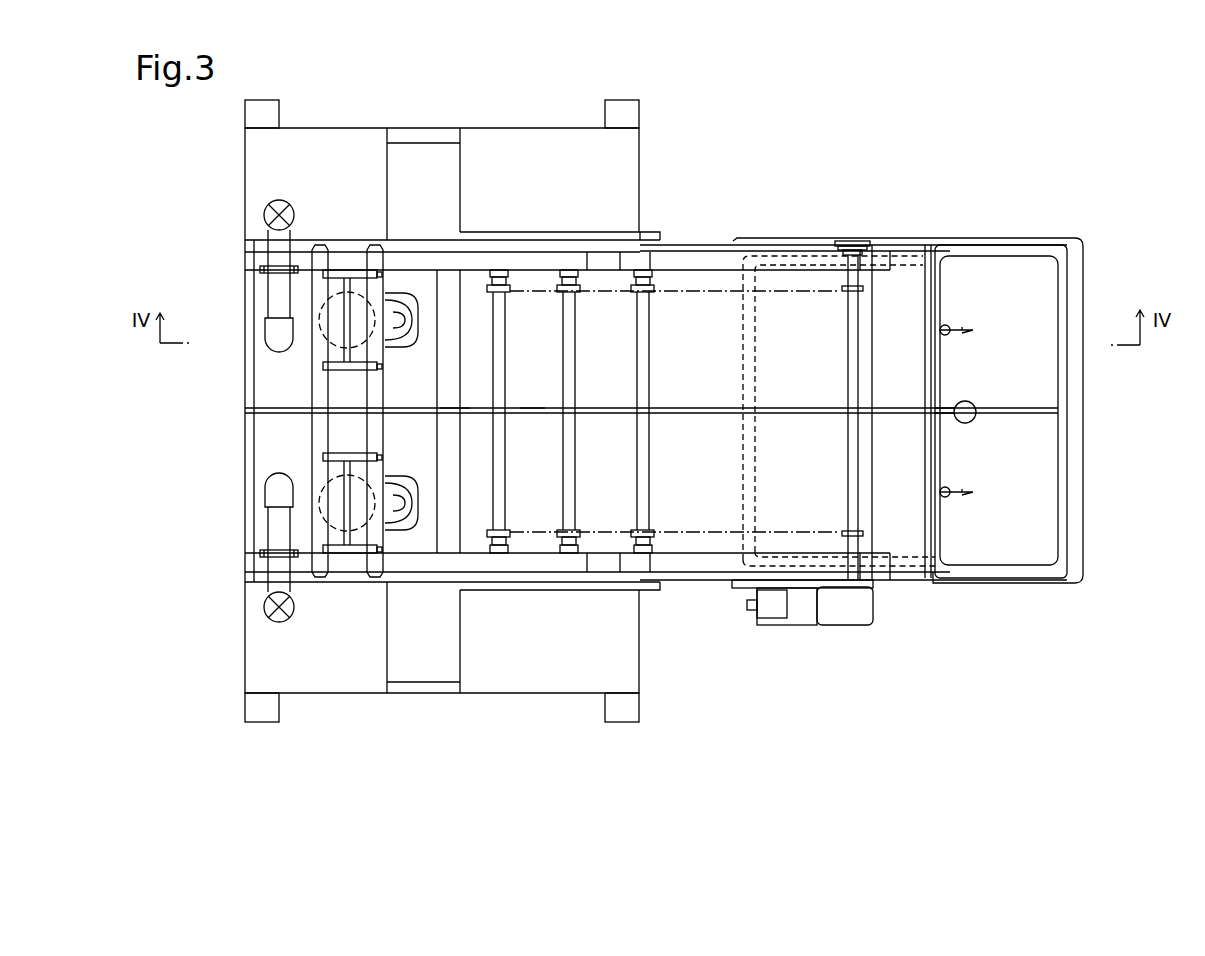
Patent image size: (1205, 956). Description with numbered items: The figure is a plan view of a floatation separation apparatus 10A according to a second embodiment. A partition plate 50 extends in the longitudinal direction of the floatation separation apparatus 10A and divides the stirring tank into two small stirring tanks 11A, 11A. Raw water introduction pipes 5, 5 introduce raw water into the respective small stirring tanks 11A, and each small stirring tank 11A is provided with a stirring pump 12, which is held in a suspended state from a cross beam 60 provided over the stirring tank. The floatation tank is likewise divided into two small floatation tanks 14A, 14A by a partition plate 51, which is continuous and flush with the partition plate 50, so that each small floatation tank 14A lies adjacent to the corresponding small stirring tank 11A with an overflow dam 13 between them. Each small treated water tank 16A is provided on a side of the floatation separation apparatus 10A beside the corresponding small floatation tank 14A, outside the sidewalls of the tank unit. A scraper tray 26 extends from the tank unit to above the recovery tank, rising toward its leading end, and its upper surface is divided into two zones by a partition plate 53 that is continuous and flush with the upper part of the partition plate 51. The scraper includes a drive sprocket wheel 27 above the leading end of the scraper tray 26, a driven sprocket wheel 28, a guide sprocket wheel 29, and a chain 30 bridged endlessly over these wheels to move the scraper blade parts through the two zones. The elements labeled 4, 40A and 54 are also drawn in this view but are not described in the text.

The caster 4 is at (285, 200).
The raw water introduction pipe 5 is at (276, 290).
The floatation separation apparatus 10A is at (862, 177).
The small stirring tank 11A is at (257, 389).
The stirring pump 12 is at (338, 330).
The overflow dam 13 is at (444, 378).
The small floatation tank 14A is at (540, 345).
The small treated water tank 16A is at (620, 187).
The scraper tray 26 is at (830, 457).
The drive sprocket wheel 27 is at (836, 283).
The driven sprocket wheel 28 is at (512, 282).
The guide sprocket wheel 29 is at (620, 283).
The chain 30 is at (700, 293).
The tray 40A is at (1038, 288).
The partition plate 50 is at (410, 415).
The partition plate 51 is at (528, 416).
The partition plate 53 is at (695, 418).
The motor 54 is at (1017, 406).
The cross beam 60 is at (378, 391).